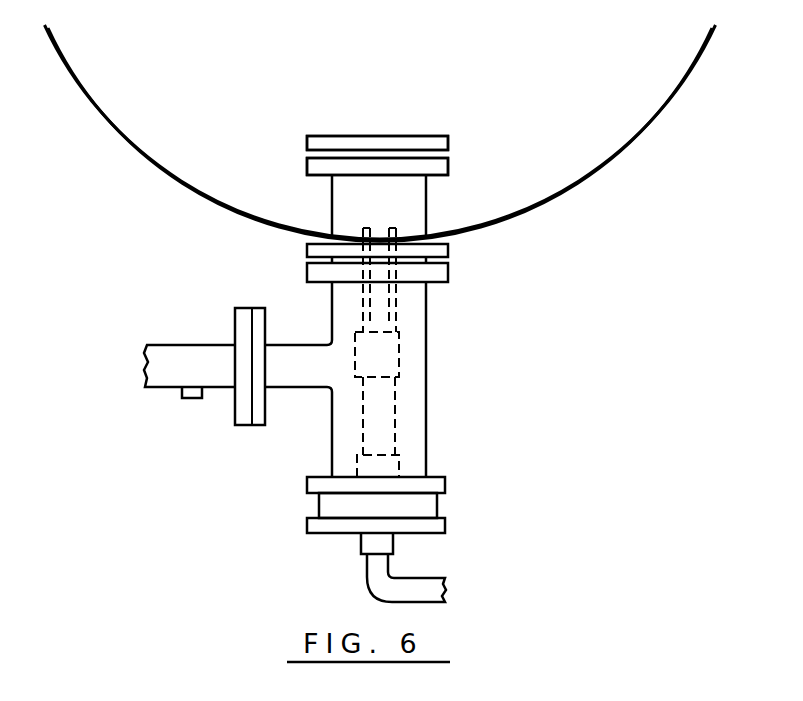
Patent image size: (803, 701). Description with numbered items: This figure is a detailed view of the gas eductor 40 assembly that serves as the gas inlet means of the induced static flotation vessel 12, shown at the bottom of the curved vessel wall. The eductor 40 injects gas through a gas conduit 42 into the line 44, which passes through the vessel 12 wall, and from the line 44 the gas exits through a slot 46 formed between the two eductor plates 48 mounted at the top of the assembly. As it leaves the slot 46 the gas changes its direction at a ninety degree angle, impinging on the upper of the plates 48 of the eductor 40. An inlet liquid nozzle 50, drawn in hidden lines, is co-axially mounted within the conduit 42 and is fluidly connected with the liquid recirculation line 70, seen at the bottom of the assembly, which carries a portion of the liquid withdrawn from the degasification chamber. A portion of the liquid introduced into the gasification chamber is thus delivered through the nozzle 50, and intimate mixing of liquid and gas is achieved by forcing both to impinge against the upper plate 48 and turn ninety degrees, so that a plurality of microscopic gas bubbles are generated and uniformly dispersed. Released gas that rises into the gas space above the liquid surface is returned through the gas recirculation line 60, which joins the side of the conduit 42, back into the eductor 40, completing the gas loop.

The induced static flotation vessel 12 is at (588, 202).
The gas eductor 40 is at (439, 132).
The gas conduit 42 is at (427, 387).
The line 44 is at (342, 197).
The slot 46 is at (312, 154).
The eductor plates 48 is at (450, 141).
The inlet liquid nozzle 50 is at (397, 232).
The gas recirculation line 60 is at (212, 345).
The liquid recirculation line 70 is at (423, 578).